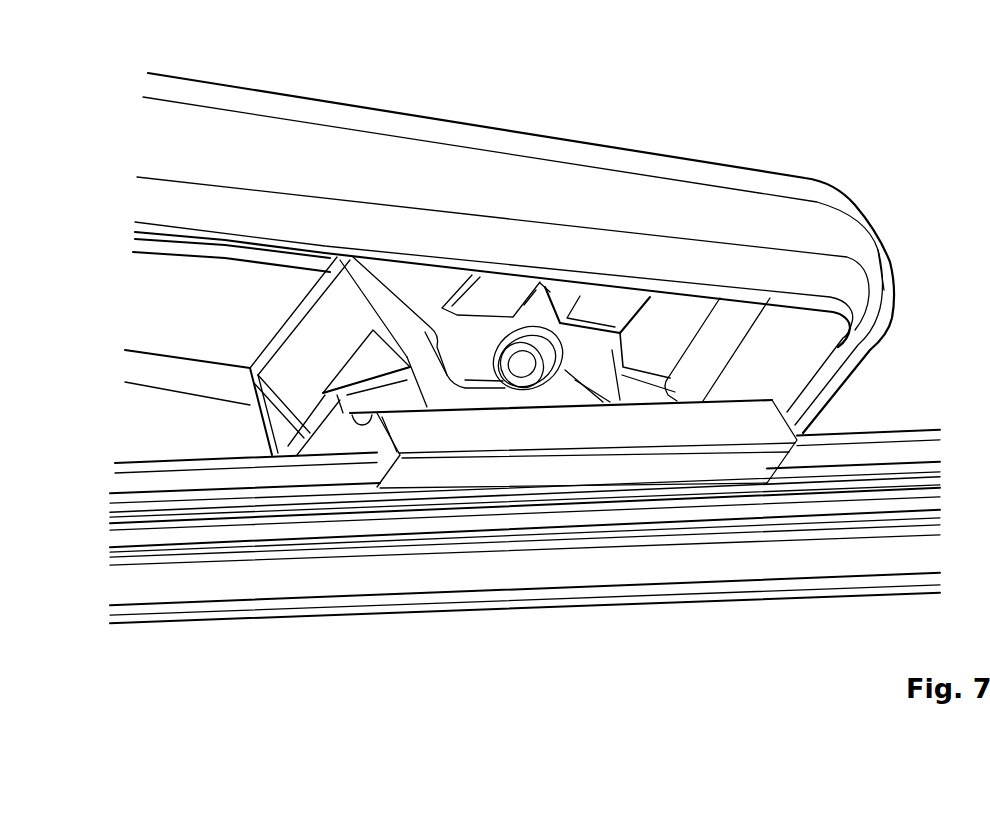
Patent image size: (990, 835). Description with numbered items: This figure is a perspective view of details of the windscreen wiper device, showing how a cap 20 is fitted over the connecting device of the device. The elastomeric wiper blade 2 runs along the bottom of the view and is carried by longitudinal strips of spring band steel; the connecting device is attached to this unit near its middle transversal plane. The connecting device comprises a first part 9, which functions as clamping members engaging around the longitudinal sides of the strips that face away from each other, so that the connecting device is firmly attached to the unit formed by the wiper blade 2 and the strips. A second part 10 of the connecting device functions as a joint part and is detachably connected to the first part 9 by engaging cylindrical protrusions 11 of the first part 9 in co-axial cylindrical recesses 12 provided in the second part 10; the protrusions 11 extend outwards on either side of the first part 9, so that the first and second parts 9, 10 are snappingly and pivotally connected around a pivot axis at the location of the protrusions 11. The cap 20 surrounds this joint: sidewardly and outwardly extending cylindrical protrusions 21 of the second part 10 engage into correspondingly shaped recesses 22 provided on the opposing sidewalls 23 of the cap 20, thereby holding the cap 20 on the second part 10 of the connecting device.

The wiper blade 2 is at (732, 570).
The first part 9 is at (557, 440).
The second part 10 is at (292, 377).
The cylindrical protrusions 11 is at (530, 398).
The cylindrical recesses 12 is at (565, 392).
The cap 20 is at (690, 172).
The cylindrical protrusions 21 is at (548, 280).
The recesses 22 is at (573, 290).
The sidewalls 23 is at (750, 295).